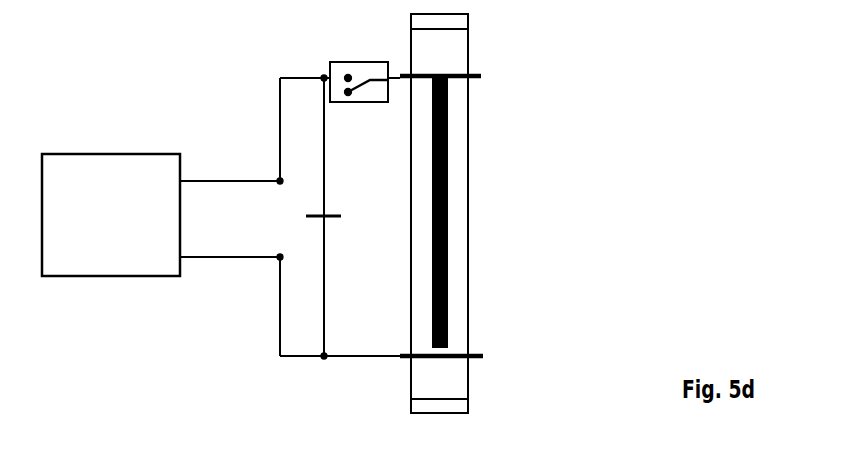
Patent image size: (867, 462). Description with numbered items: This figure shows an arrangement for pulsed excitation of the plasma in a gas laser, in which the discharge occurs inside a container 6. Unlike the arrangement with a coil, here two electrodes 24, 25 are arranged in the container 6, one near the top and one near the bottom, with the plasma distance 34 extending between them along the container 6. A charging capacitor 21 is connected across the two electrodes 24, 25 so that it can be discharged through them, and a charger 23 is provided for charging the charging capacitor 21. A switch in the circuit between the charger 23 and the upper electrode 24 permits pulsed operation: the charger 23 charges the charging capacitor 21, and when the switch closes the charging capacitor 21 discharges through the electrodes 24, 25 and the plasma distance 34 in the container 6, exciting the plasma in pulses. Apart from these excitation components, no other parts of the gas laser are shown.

The charger 23 is at (126, 256).
The charging capacitor 21 is at (336, 219).
The electrode 24 is at (481, 76).
The electrode 25 is at (483, 356).
The plasma distance 34 is at (446, 195).
The container 6 is at (473, 317).